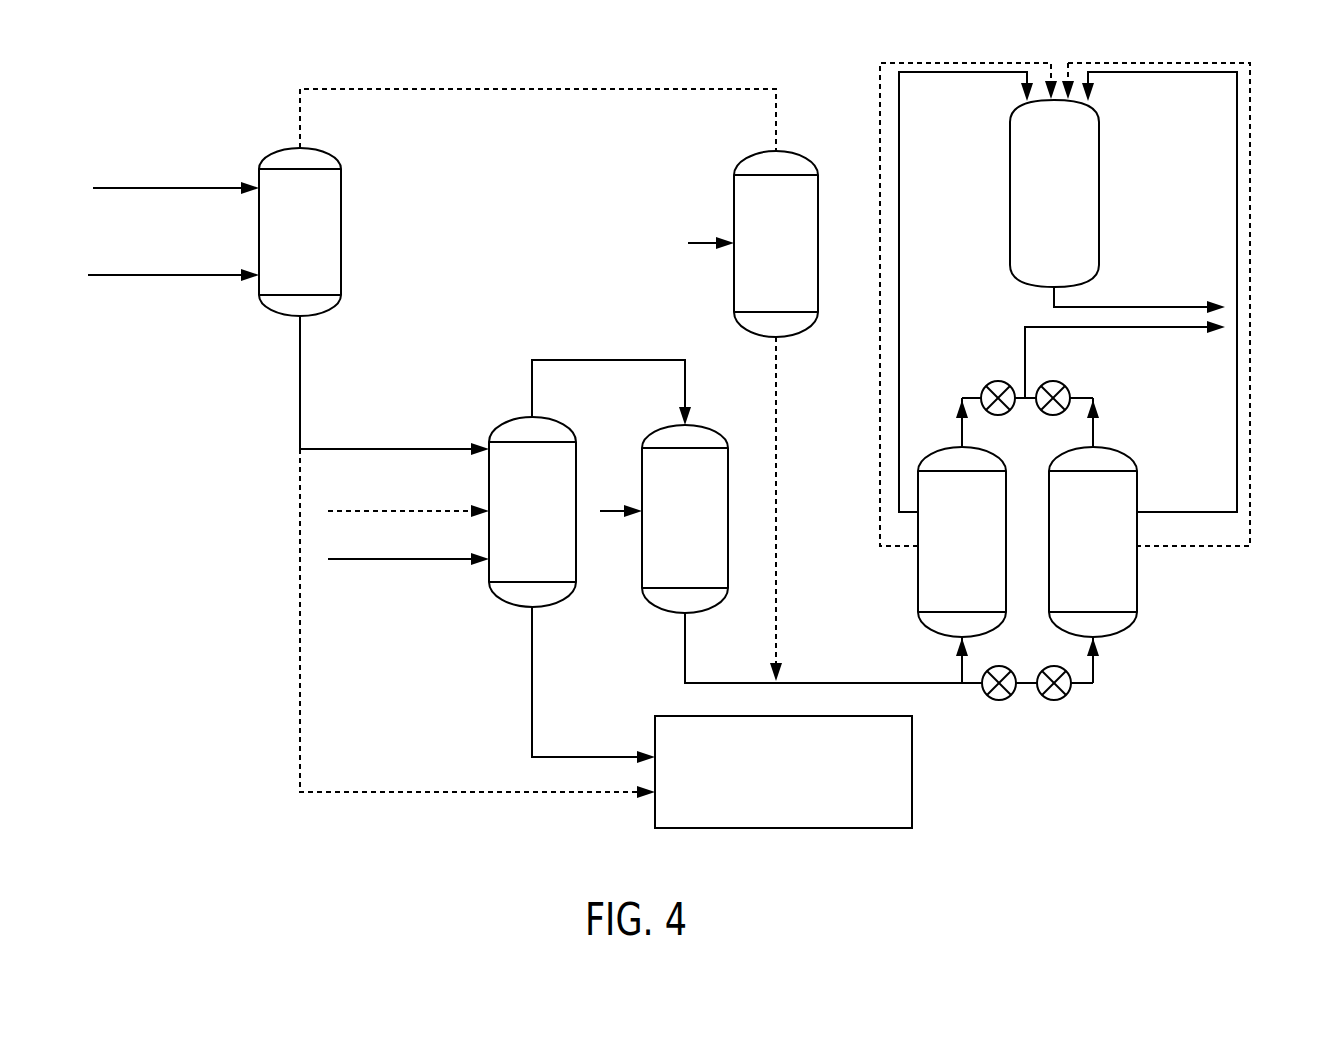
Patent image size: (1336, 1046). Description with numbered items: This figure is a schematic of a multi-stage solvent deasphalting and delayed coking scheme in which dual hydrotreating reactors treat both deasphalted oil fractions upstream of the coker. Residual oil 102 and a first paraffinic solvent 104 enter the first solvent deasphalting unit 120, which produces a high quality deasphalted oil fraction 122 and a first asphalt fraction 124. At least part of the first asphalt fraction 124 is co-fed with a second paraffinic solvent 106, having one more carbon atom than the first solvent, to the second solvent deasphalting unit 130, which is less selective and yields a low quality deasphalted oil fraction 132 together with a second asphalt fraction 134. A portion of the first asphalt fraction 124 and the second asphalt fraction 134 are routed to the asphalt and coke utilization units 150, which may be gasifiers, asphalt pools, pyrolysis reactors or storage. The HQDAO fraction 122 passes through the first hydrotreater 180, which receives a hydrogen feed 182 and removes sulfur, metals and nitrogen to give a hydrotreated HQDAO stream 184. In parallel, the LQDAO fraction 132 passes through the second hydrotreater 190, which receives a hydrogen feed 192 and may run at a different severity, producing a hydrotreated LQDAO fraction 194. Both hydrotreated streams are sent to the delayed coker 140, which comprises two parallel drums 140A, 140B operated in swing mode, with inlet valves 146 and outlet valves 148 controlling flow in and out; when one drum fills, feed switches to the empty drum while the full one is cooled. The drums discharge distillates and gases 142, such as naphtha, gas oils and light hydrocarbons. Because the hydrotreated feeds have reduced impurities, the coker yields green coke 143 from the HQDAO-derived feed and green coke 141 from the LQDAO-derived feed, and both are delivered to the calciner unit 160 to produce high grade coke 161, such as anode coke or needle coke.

The residual oil 102 is at (133, 188).
The first paraffinic solvent 104 is at (133, 275).
The second paraffinic solvent 106 is at (368, 562).
The first solvent deasphalting unit 120 is at (287, 246).
The high quality deasphalted oil (HQDAO) fraction 122 is at (512, 92).
The first asphalt fraction 124 is at (300, 357).
The second solvent deasphalting unit 130 is at (519, 524).
The low quality deasphalted oil (LQDAO) fraction 132 is at (620, 358).
The second asphalt fraction 134 is at (532, 680).
The delayed coker 140 is at (897, 573).
The coke drum 140A is at (942, 552).
The coke drum 140B is at (1073, 552).
The fuel grade coke / green coke 141 is at (900, 295).
The distillates and gases 142 is at (1180, 330).
The green coke 143 is at (880, 108).
The inlet valves 146 is at (1053, 700).
The outlet valves 148 is at (995, 381).
The asphalt and coke utilization units 150 is at (770, 782).
The calciner unit 160 is at (1041, 209).
The high grade coke 161 is at (1185, 305).
The first hydrotreater 180 is at (763, 256).
The hydrogen feed 182 is at (698, 240).
The hydrotreated HQDAO stream 184 is at (775, 410).
The second hydrotreater 190 is at (672, 524).
The hydrogen feed 192 is at (612, 508).
The hydrotreated LQDAO fraction 194 is at (685, 650).